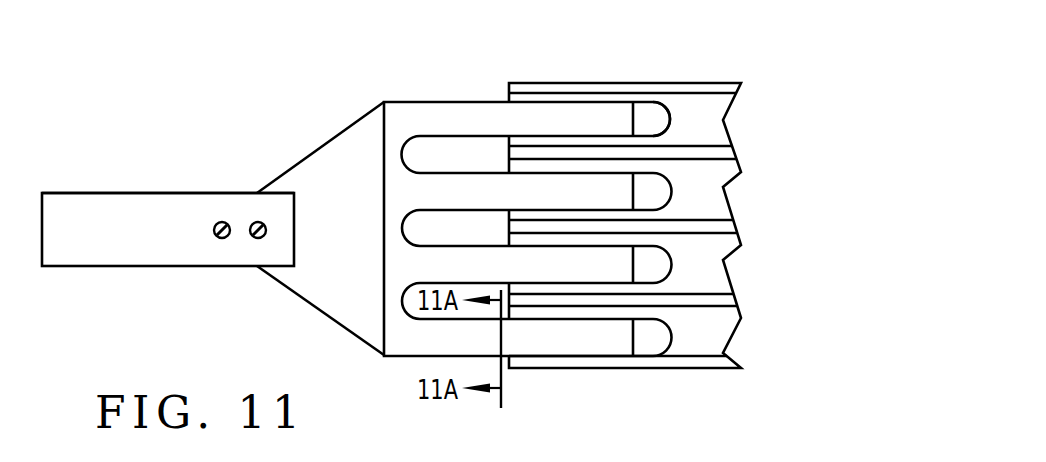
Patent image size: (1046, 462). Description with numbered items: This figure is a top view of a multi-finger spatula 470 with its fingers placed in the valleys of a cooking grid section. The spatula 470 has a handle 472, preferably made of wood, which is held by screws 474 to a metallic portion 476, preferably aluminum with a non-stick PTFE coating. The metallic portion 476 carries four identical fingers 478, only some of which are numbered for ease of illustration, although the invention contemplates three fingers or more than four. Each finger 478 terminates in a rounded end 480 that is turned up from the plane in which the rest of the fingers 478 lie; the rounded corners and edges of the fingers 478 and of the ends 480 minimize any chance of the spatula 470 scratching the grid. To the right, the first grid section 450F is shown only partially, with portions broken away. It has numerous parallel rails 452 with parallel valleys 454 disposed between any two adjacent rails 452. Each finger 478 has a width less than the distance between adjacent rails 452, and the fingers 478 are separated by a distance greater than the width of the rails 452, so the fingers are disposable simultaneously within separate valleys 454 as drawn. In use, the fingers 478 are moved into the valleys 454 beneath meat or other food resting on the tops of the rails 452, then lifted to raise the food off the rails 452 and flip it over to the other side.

The multi-finger spatula 470 is at (155, 267).
The handle 472 is at (140, 192).
The screws 474 is at (252, 222).
The metallic portion 476 is at (340, 157).
The fingers 478 is at (477, 193).
The rounded end 480 is at (655, 113).
The first grid section 450F is at (725, 113).
The rails 452 is at (690, 217).
The valleys 454 is at (708, 265).